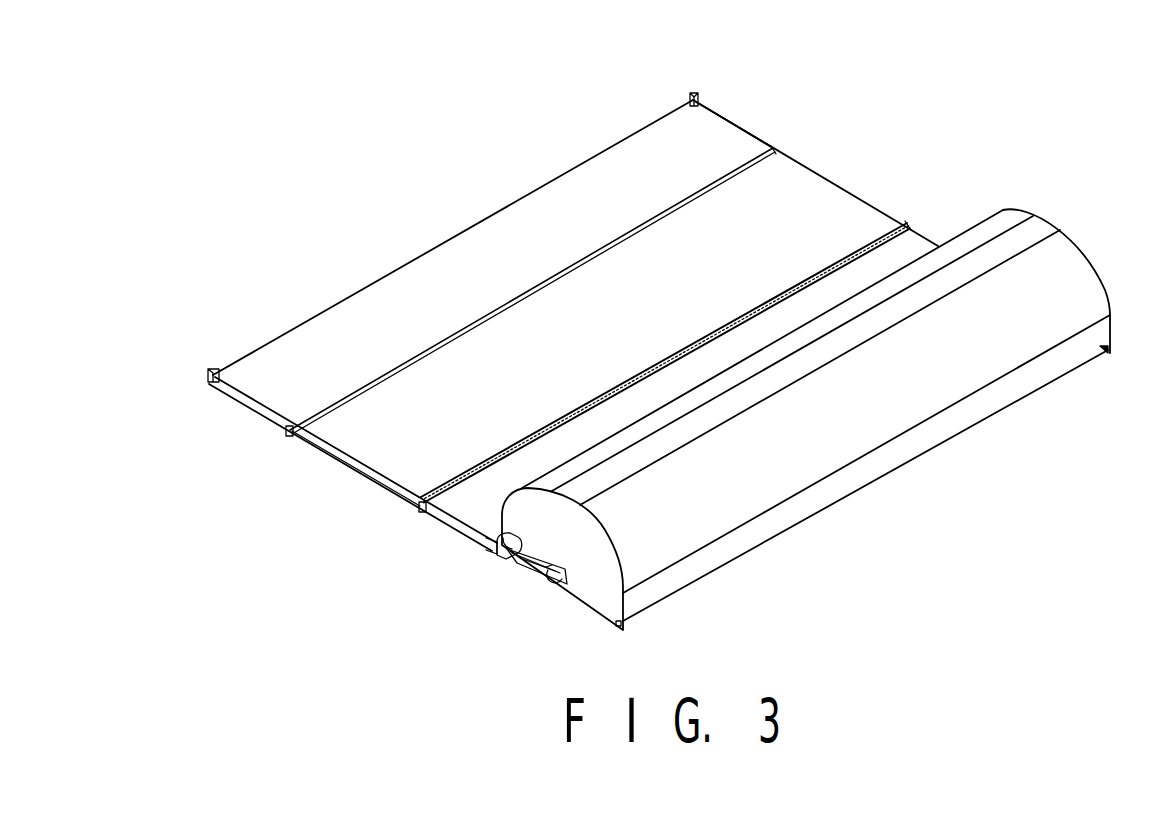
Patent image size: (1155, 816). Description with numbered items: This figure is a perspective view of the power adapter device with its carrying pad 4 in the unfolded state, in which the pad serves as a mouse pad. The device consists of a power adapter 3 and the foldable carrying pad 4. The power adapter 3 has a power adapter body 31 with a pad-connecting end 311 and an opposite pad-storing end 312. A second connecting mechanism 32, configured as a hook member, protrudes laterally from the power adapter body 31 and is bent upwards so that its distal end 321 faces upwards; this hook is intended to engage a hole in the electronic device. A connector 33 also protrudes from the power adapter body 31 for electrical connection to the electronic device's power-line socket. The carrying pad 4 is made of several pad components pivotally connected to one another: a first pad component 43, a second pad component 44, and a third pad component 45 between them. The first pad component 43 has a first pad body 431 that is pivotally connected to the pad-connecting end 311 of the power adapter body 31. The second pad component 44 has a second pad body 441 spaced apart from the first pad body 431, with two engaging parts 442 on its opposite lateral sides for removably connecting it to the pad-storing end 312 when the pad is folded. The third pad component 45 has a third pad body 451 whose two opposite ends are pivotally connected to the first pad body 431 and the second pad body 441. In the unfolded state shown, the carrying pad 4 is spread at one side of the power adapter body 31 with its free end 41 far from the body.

The power adapter 3 is at (747, 411).
The power adapter body 31 is at (806, 462).
The pad-connecting end 311 is at (491, 539).
The pad-storing end 312 is at (950, 437).
The second connecting mechanism 32 is at (513, 612).
The distal end 321 is at (511, 619).
The connector 33 is at (500, 548).
The carrying pad 4 is at (593, 304).
The free end 41 is at (433, 247).
The first pad component 43 is at (688, 359).
The first pad body 431 is at (462, 503).
The second pad component 44 is at (745, 113).
The second pad body 441 is at (615, 167).
The engaging parts 442 is at (695, 93).
The third pad component 45 is at (353, 464).
The third pad body 451 is at (360, 447).